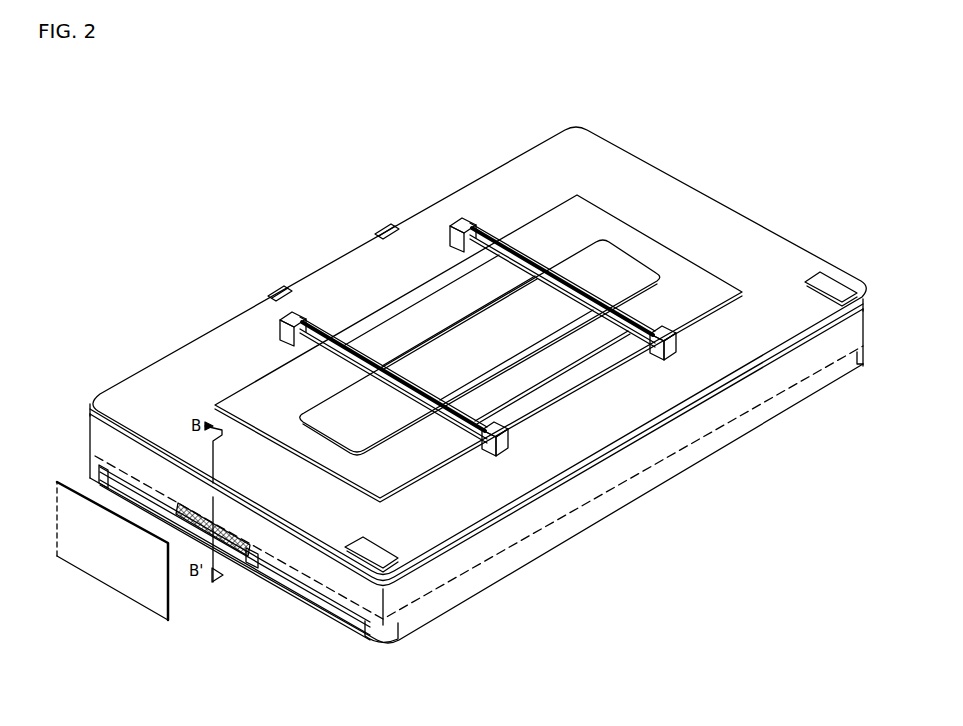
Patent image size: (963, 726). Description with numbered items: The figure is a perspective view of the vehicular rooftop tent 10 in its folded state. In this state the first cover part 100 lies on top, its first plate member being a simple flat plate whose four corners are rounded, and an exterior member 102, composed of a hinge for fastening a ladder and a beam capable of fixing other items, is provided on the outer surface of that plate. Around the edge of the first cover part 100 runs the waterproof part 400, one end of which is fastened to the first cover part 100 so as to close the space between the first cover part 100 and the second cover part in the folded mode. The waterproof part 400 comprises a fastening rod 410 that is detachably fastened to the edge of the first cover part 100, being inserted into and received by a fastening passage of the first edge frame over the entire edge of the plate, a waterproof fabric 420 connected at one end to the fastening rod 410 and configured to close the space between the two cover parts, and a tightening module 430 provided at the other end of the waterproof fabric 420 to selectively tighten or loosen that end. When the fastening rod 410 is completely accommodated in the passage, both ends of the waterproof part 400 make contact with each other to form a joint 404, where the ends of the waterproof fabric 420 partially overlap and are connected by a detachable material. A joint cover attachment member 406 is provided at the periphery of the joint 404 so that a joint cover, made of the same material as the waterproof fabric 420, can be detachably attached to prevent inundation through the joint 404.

The vehicular rooftop tent 10 is at (370, 178).
The first cover part 100 is at (758, 250).
The exterior member 102 is at (299, 315).
The waterproof part 400 is at (497, 565).
The joint 404 is at (100, 455).
The joint cover attachment member 406 is at (178, 506).
The fastening rod 410 is at (89, 418).
The waterproof fabric 420 is at (98, 471).
The tightening module 430 is at (122, 583).